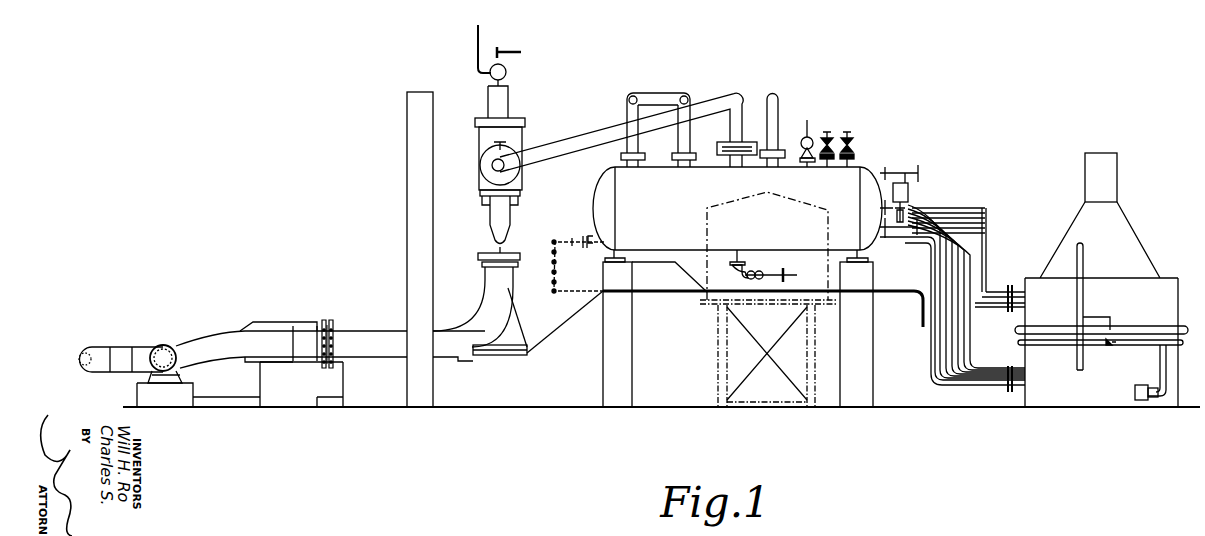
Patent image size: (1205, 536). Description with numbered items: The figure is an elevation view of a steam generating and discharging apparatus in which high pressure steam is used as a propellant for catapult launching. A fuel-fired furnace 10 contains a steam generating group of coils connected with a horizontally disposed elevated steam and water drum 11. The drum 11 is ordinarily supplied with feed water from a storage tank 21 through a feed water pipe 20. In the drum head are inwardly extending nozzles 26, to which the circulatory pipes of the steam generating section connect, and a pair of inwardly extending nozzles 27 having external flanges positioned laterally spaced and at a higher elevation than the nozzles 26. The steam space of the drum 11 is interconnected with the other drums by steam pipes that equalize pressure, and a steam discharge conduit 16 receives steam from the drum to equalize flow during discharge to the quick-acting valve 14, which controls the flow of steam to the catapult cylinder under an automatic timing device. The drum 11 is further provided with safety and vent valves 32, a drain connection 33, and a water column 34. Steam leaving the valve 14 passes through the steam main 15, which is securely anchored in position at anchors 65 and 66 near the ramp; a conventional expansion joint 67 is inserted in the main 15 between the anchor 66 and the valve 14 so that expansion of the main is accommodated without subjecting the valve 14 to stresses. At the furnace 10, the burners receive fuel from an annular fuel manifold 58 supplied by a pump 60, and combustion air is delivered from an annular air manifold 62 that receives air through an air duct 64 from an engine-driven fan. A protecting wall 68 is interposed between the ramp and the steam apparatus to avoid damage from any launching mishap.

The fuel-fired furnace 10 is at (1164, 292).
The steam and water drums 11 is at (842, 184).
The quick-acting valve 14 is at (515, 141).
The steam main 15 is at (370, 345).
The steam discharge conduits 16 is at (714, 105).
The feed water pipe 20 is at (576, 292).
The storage tank 21 is at (707, 223).
The nozzles 26 is at (882, 240).
The nozzles 27 is at (905, 180).
The safety and vent valves 32 is at (848, 131).
The drain connection 33 is at (741, 262).
The water column 34 is at (912, 198).
The fuel manifold 58 is at (1060, 347).
The pump 60 is at (1135, 395).
The air manifold 62 is at (1043, 327).
The air duct 64 is at (1083, 258).
The anchor 65 is at (170, 372).
The anchor 66 is at (283, 385).
The expansion joint 67 is at (328, 320).
The protecting wall 68 is at (407, 134).